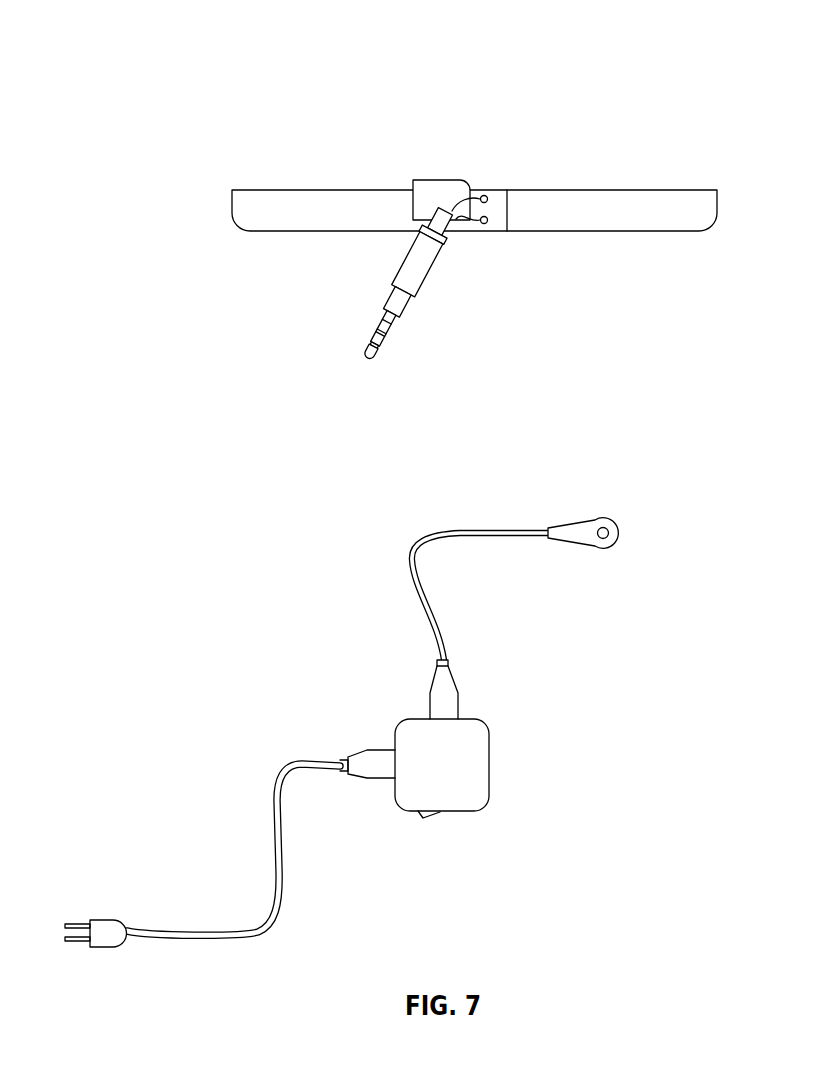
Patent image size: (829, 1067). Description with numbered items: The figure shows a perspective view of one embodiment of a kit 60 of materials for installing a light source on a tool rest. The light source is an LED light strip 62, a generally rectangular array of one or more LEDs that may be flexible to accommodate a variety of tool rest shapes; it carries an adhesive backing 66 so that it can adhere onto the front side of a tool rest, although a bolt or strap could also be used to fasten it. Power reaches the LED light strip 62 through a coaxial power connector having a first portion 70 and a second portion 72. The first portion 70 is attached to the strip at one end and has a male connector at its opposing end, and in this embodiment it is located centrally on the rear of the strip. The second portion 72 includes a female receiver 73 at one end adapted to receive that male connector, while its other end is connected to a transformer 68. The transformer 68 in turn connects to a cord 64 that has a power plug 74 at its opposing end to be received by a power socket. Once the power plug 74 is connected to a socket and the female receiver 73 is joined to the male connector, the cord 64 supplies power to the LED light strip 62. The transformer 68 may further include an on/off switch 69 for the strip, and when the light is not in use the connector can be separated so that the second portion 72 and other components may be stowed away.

The kit 60 is at (615, 97).
The LED light strip 62 is at (511, 190).
The cord 64 is at (280, 847).
The adhesive backing 66 is at (305, 223).
The transformer 68 is at (455, 764).
The on/off switch 69 is at (424, 815).
The first portion 70 is at (433, 281).
The second portion 72 is at (618, 500).
The female receiver 73 is at (610, 532).
The power plug 74 is at (99, 927).